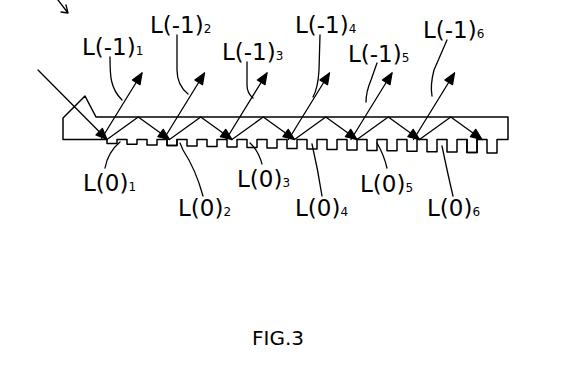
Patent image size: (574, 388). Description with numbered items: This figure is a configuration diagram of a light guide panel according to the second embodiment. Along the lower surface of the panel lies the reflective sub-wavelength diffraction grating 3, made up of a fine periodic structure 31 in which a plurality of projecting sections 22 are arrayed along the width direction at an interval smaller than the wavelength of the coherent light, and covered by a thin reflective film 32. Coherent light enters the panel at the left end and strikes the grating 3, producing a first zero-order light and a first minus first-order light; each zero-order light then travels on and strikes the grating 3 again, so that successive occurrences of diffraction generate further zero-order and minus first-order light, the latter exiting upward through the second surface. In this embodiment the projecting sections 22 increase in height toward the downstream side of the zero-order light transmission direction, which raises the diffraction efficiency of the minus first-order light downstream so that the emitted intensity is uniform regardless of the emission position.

The reflective sub-wavelength diffraction grating 3 is at (216, 164).
The projecting sections 22 is at (493, 150).
The fine periodic structure 31 is at (175, 146).
The reflective film 32 is at (467, 148).